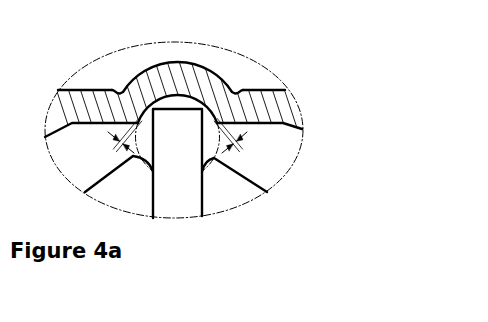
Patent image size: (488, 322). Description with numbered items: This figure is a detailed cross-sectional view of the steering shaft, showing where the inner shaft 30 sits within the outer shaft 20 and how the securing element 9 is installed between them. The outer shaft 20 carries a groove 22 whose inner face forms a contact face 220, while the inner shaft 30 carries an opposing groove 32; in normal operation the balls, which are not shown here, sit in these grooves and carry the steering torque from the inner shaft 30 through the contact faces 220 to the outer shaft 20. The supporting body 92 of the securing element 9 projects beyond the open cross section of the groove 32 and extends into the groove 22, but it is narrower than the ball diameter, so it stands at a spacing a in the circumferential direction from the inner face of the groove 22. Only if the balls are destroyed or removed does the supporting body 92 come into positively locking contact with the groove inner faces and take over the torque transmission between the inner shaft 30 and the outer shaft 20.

The outer shaft 20 is at (200, 83).
The groove 22 is at (166, 94).
The contact face 220 is at (139, 121).
The securing element 9 is at (185, 180).
The supporting body 92 is at (215, 174).
The groove 32 is at (150, 170).
The inner shaft 30 is at (226, 180).
The spacing a is at (108, 132).